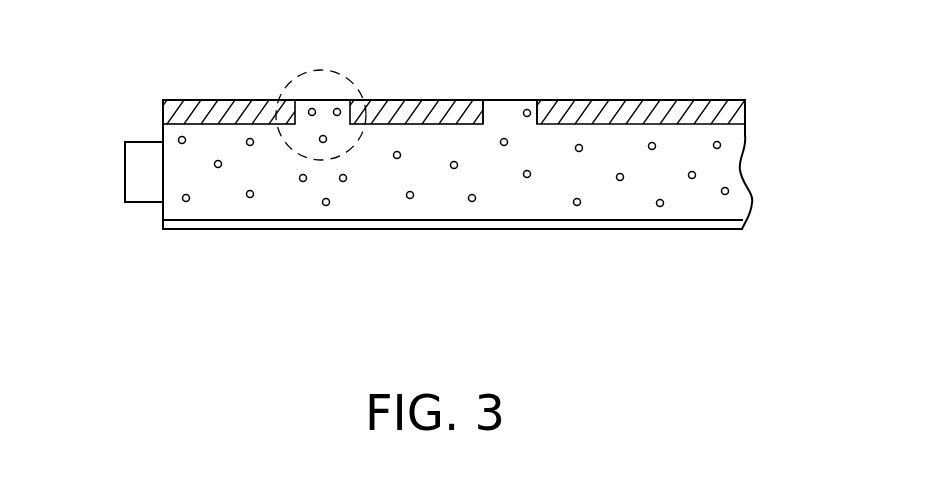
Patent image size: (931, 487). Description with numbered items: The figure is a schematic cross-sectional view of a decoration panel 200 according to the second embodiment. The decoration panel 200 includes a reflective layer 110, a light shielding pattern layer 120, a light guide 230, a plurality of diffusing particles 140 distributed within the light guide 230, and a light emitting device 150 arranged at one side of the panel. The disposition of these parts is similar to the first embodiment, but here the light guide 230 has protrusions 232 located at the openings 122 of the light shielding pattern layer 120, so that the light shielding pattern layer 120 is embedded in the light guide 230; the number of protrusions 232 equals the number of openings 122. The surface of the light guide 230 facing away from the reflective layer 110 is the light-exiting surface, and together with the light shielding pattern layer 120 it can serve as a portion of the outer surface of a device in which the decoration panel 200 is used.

The reflective layer 110 is at (293, 222).
The light shielding pattern layer 120 is at (230, 100).
The opening 122 is at (493, 119).
The diffusing particle 140 is at (526, 178).
The light emitting device 150 is at (146, 173).
The decoration panel 200 is at (800, 307).
The light guide 230 is at (441, 200).
The protrusion 232 is at (349, 77).